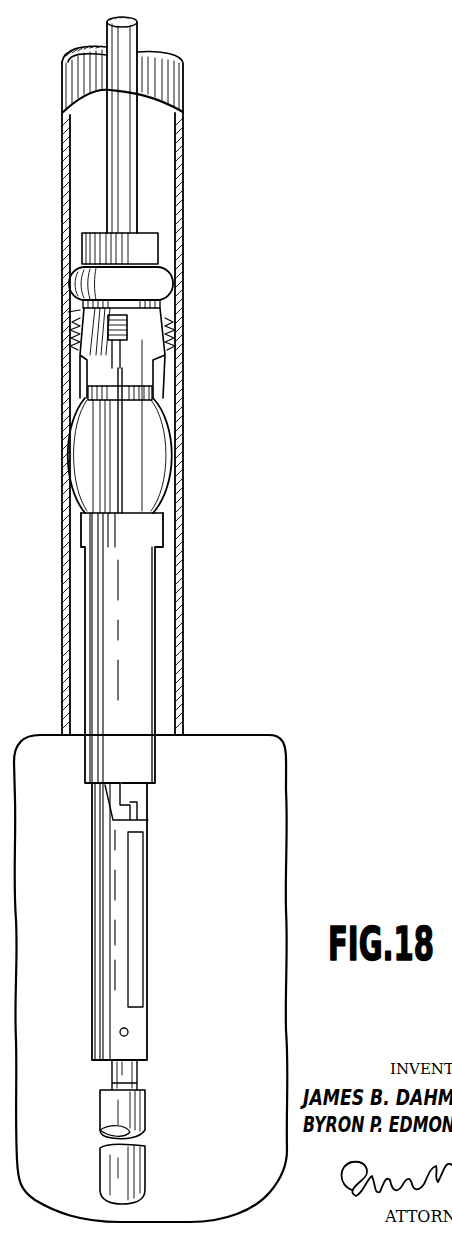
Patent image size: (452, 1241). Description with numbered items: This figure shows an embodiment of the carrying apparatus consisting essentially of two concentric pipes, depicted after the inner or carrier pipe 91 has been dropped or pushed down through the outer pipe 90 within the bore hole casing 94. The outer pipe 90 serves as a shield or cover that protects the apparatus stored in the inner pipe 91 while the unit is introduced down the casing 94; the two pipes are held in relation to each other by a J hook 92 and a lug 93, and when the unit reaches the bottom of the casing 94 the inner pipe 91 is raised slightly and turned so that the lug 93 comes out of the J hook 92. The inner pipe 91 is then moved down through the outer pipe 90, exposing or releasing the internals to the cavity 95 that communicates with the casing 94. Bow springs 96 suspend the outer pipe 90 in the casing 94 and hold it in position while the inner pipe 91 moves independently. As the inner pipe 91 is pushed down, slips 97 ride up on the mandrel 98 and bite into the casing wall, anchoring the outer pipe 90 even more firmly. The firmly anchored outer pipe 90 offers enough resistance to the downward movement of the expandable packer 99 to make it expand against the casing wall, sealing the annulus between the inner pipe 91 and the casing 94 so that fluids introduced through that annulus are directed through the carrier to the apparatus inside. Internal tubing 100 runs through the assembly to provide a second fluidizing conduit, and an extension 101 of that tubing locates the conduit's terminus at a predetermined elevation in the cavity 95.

The outer pipe 90 is at (155, 634).
The inner pipe 91 is at (92, 914).
The J hook 92 is at (140, 824).
The lug 93 is at (129, 1033).
The casing 94 is at (183, 530).
The cavity 95 is at (228, 971).
The bow springs 96 is at (173, 445).
The slips 97 is at (127, 332).
The mandrel 98 is at (137, 347).
The expandable packer 99 is at (166, 284).
The internal tubing 100 is at (137, 150).
The extension 101 is at (145, 1150).